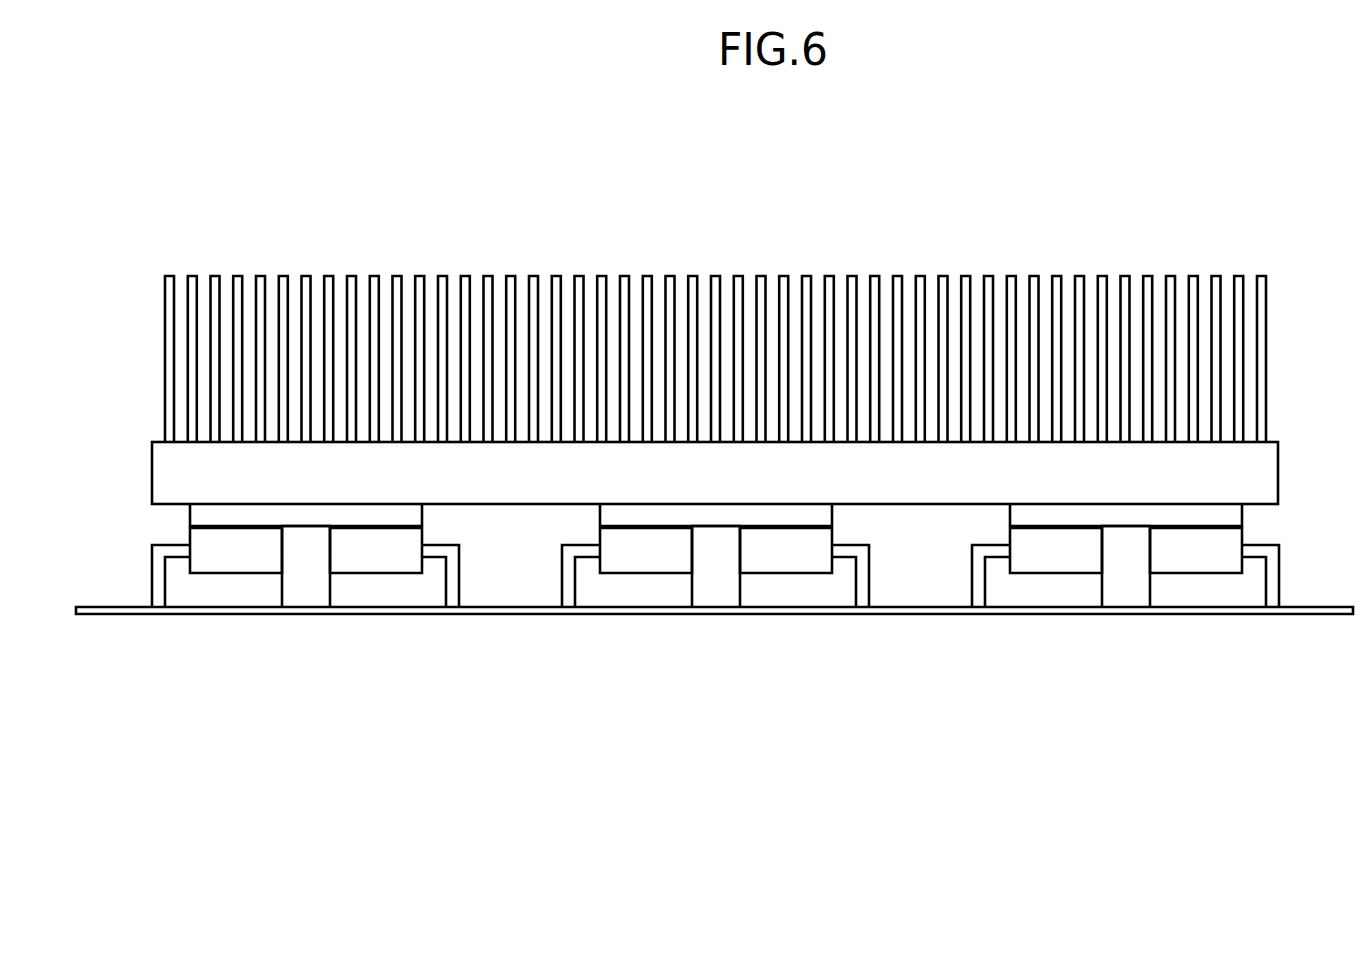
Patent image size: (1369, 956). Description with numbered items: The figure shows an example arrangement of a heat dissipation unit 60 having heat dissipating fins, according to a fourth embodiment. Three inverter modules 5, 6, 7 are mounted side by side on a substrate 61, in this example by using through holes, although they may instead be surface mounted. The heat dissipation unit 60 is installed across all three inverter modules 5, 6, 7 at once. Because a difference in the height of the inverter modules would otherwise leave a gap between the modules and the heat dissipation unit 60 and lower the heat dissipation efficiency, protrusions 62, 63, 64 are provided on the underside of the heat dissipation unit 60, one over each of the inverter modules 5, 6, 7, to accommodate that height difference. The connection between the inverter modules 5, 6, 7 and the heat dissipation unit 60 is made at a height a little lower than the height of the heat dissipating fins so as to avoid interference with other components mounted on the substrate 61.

The heat dissipation unit 60 is at (152, 470).
The substrate 61 is at (105, 615).
The inverter module 5 is at (222, 573).
The inverter module 6 is at (632, 573).
The inverter module 7 is at (1042, 573).
The protrusion 62 is at (306, 596).
The protrusion 63 is at (716, 596).
The protrusion 64 is at (1125, 596).